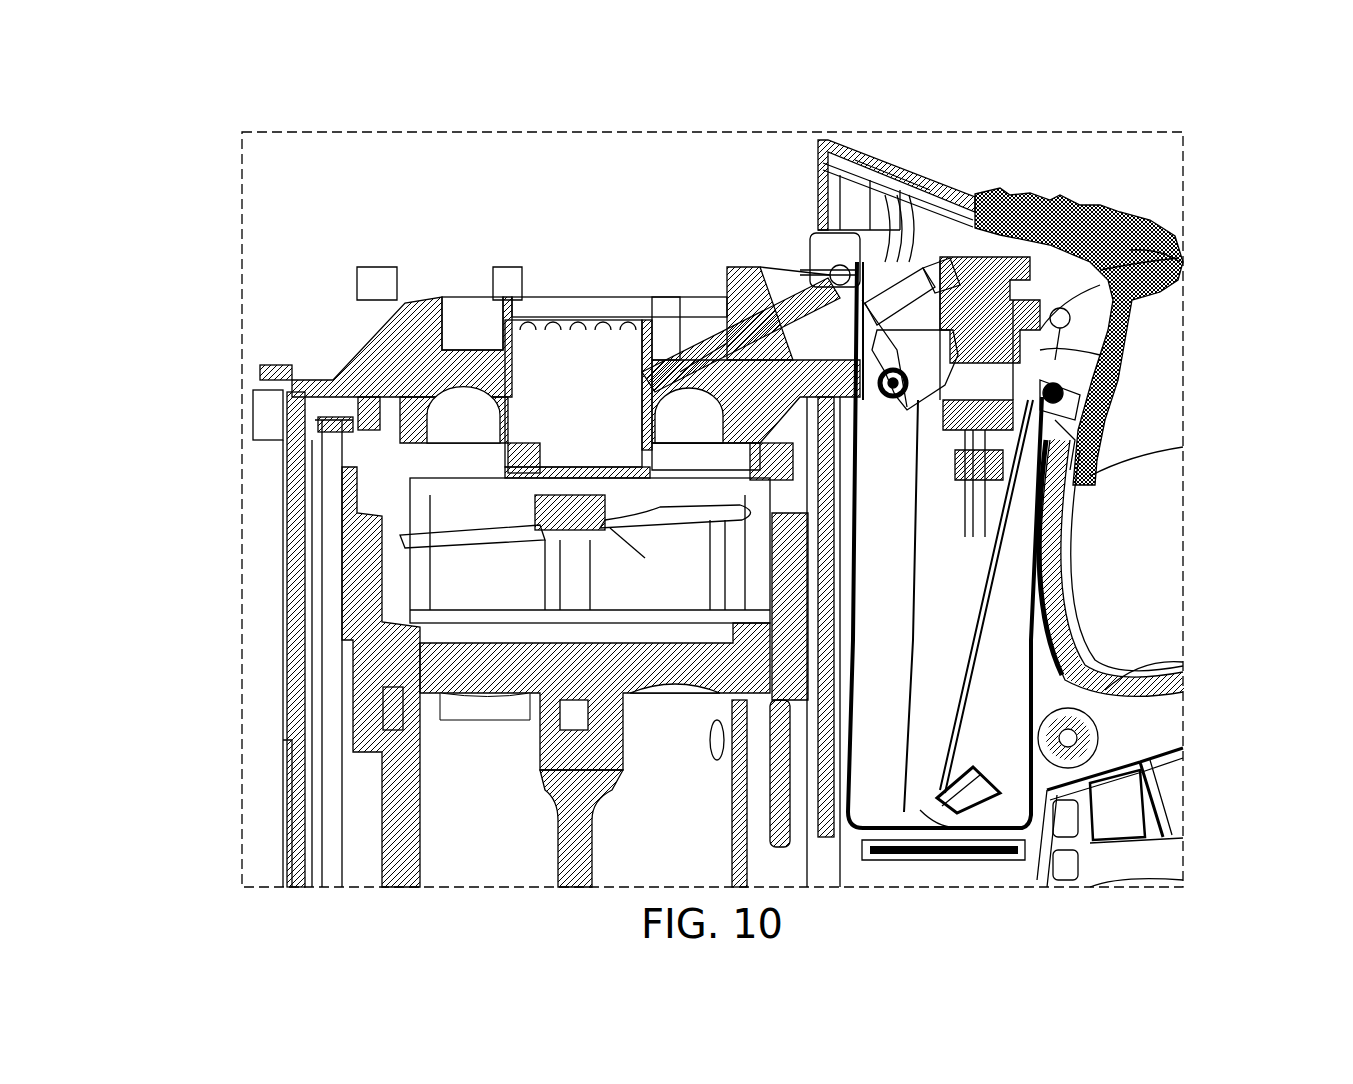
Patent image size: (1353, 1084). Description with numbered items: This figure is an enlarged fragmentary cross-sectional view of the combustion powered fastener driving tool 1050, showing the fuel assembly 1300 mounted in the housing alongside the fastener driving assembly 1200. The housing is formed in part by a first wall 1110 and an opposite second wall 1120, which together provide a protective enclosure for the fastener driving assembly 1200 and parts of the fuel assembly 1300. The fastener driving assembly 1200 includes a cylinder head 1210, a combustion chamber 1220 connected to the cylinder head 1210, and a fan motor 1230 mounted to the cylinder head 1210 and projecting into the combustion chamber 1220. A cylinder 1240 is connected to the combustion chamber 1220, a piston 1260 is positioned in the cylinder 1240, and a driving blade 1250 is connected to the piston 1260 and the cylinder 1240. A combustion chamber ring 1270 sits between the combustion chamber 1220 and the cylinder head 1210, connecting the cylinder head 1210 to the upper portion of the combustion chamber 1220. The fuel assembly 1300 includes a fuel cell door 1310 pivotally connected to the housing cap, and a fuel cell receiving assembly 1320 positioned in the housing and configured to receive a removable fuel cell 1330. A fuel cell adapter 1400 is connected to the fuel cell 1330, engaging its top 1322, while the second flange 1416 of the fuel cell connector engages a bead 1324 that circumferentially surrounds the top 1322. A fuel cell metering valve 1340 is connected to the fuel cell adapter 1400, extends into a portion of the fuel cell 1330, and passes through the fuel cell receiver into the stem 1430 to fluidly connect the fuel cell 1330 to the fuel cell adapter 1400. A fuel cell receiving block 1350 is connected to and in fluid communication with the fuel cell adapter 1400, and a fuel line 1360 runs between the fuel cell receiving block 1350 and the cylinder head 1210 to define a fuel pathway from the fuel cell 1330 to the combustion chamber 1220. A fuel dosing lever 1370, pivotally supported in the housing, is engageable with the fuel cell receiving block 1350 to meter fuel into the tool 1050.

The tool 1050 is at (376, 203).
The first wall 1110 is at (298, 678).
The second wall 1120 is at (1127, 467).
The fastener driving assembly 1200 is at (580, 262).
The cylinder head 1210 is at (348, 336).
The combustion chamber 1220 is at (335, 505).
The fan motor 1230 is at (540, 508).
The cylinder 1240 is at (392, 822).
The driving blade 1250 is at (483, 662).
The piston 1260 is at (556, 835).
The combustion chamber ring 1270 is at (325, 443).
The fuel assembly 1300 is at (1007, 158).
The fuel cell door 1310 is at (1170, 240).
The fuel cell receiving assembly 1320 is at (978, 803).
The top 1322 is at (1107, 423).
The bead 1324 is at (1113, 387).
The fuel cell 1330 is at (1090, 693).
The fuel cell metering valve 1340 is at (1095, 455).
The fuel cell receiving block 1350 is at (1030, 225).
The fuel line 1360 is at (848, 215).
The fuel dosing lever 1370 is at (968, 198).
The fuel cell adapter 1400 is at (1127, 343).
The second flange 1416 is at (730, 280).
The stem 1430 is at (1180, 258).